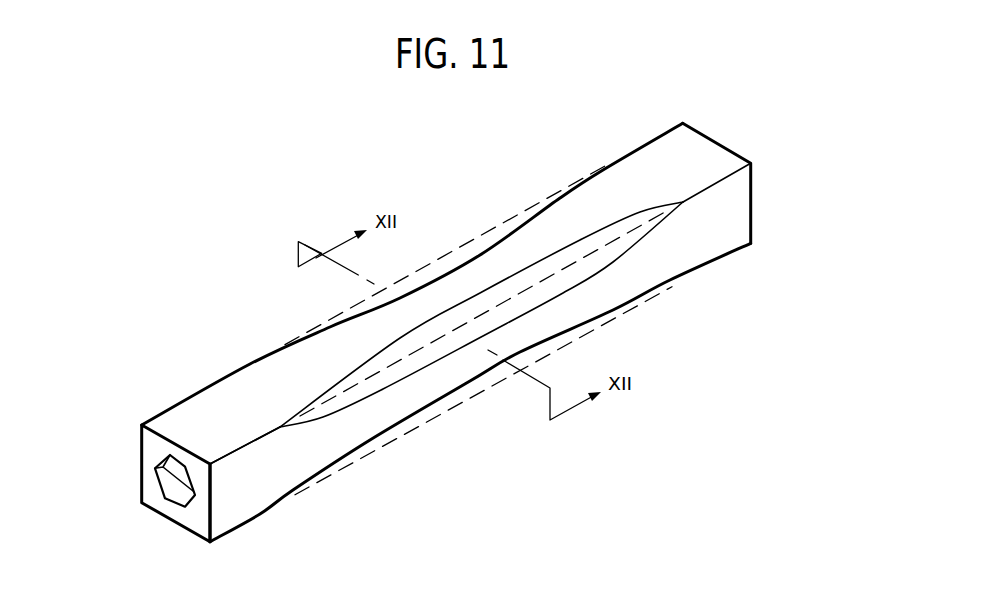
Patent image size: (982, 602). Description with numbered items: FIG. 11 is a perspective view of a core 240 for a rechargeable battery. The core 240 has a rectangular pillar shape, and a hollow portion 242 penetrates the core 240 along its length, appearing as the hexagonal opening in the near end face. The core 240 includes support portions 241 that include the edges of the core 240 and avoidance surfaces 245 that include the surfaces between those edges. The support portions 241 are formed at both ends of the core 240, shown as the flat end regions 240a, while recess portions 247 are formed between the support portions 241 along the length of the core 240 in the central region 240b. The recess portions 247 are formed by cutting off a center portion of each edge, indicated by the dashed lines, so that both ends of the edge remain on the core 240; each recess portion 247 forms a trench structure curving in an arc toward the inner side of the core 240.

The core 240 is at (494, 203).
The straight end portion 240a is at (199, 412).
The twisted portion 240b is at (355, 338).
The support portion 241 is at (247, 445).
The hollow portion 242 is at (181, 501).
The avoidance surface 245 is at (228, 513).
The recess portion 247 is at (413, 373).